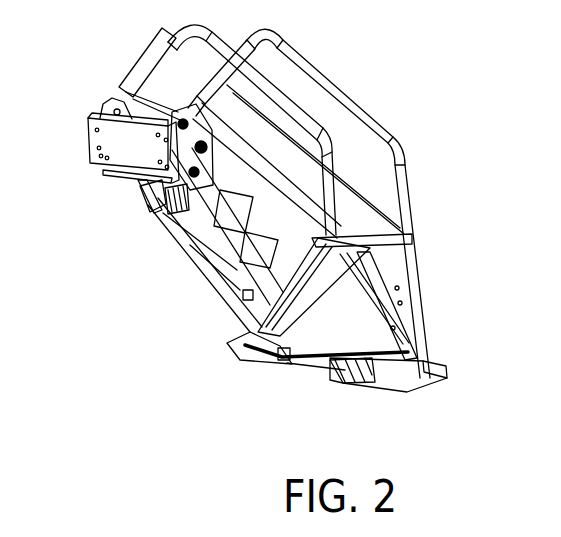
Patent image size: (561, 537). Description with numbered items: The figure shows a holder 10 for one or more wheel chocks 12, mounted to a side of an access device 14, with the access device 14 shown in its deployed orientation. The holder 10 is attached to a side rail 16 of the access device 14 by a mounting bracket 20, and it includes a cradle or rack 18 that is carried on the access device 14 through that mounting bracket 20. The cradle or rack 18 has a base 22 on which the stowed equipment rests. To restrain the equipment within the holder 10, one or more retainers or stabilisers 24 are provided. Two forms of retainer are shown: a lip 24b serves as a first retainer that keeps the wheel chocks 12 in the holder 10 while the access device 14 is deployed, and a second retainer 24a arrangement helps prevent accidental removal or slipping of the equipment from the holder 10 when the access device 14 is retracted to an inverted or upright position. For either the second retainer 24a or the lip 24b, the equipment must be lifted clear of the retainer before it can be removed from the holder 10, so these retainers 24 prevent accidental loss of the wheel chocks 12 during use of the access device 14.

The holder 10 is at (250, 338).
The wheel chock 12 is at (277, 322).
The access device 14 is at (88, 143).
The side rail 16 is at (413, 380).
The cradle or rack 18 is at (320, 373).
The mounting bracket 20 is at (332, 228).
The base 22 is at (270, 362).
The retainer 24 is at (400, 238).
The second retainer 24a is at (410, 250).
The lip 24b is at (420, 343).